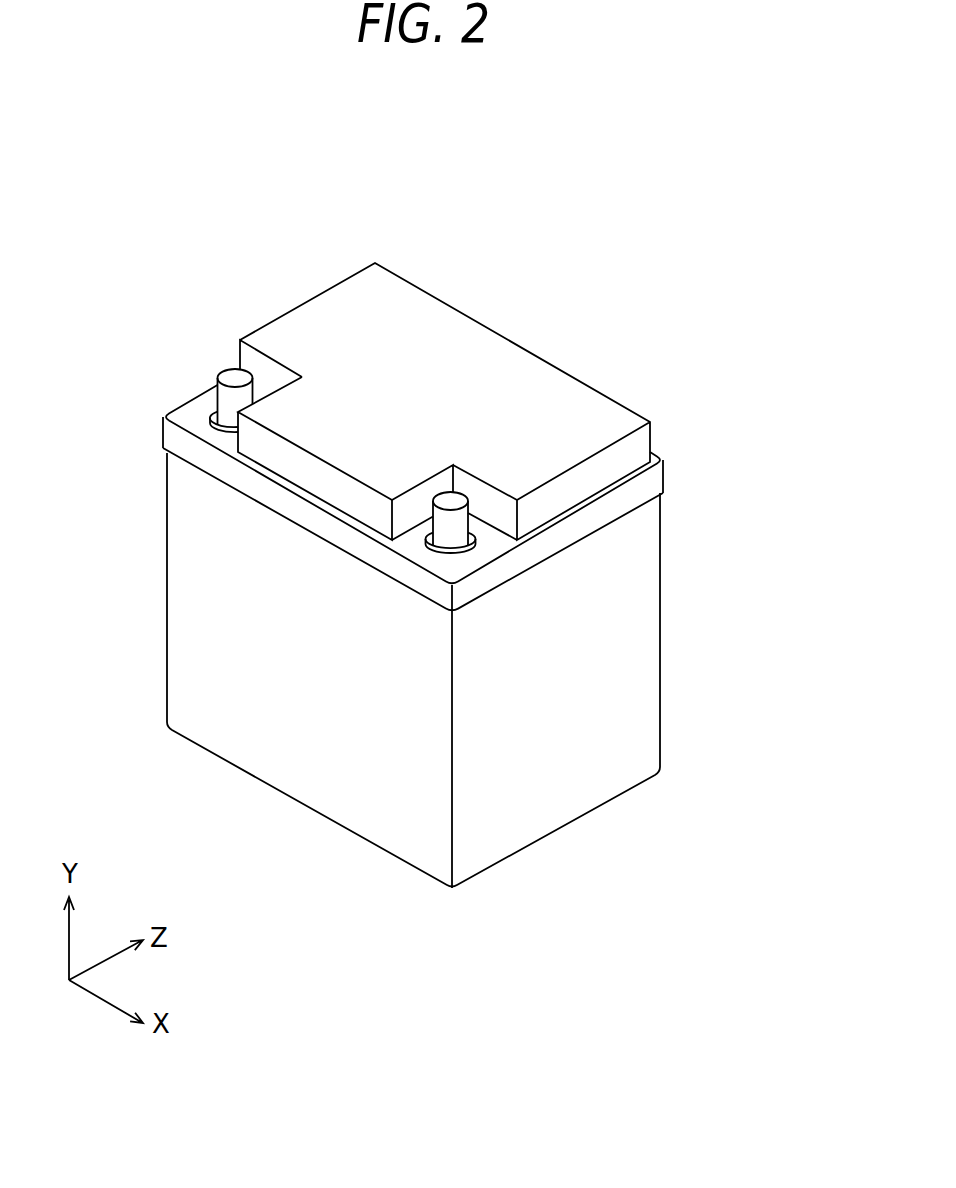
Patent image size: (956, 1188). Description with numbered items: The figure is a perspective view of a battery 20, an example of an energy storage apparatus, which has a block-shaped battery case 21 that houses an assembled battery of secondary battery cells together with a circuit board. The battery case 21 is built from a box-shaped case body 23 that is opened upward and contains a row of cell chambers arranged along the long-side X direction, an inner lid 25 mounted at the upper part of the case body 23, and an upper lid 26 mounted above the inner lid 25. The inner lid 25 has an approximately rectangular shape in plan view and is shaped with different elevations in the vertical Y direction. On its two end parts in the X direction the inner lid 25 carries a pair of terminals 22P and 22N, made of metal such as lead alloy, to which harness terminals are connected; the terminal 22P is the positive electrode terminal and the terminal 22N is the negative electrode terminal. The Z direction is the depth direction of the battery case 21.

The battery 20 is at (488, 510).
The battery case 21 is at (488, 575).
The positive electrode terminal 22P is at (232, 378).
The negative electrode terminal 22N is at (457, 500).
The case body 23 is at (613, 640).
The inner lid 25 is at (610, 495).
The upper lid 26 is at (500, 401).